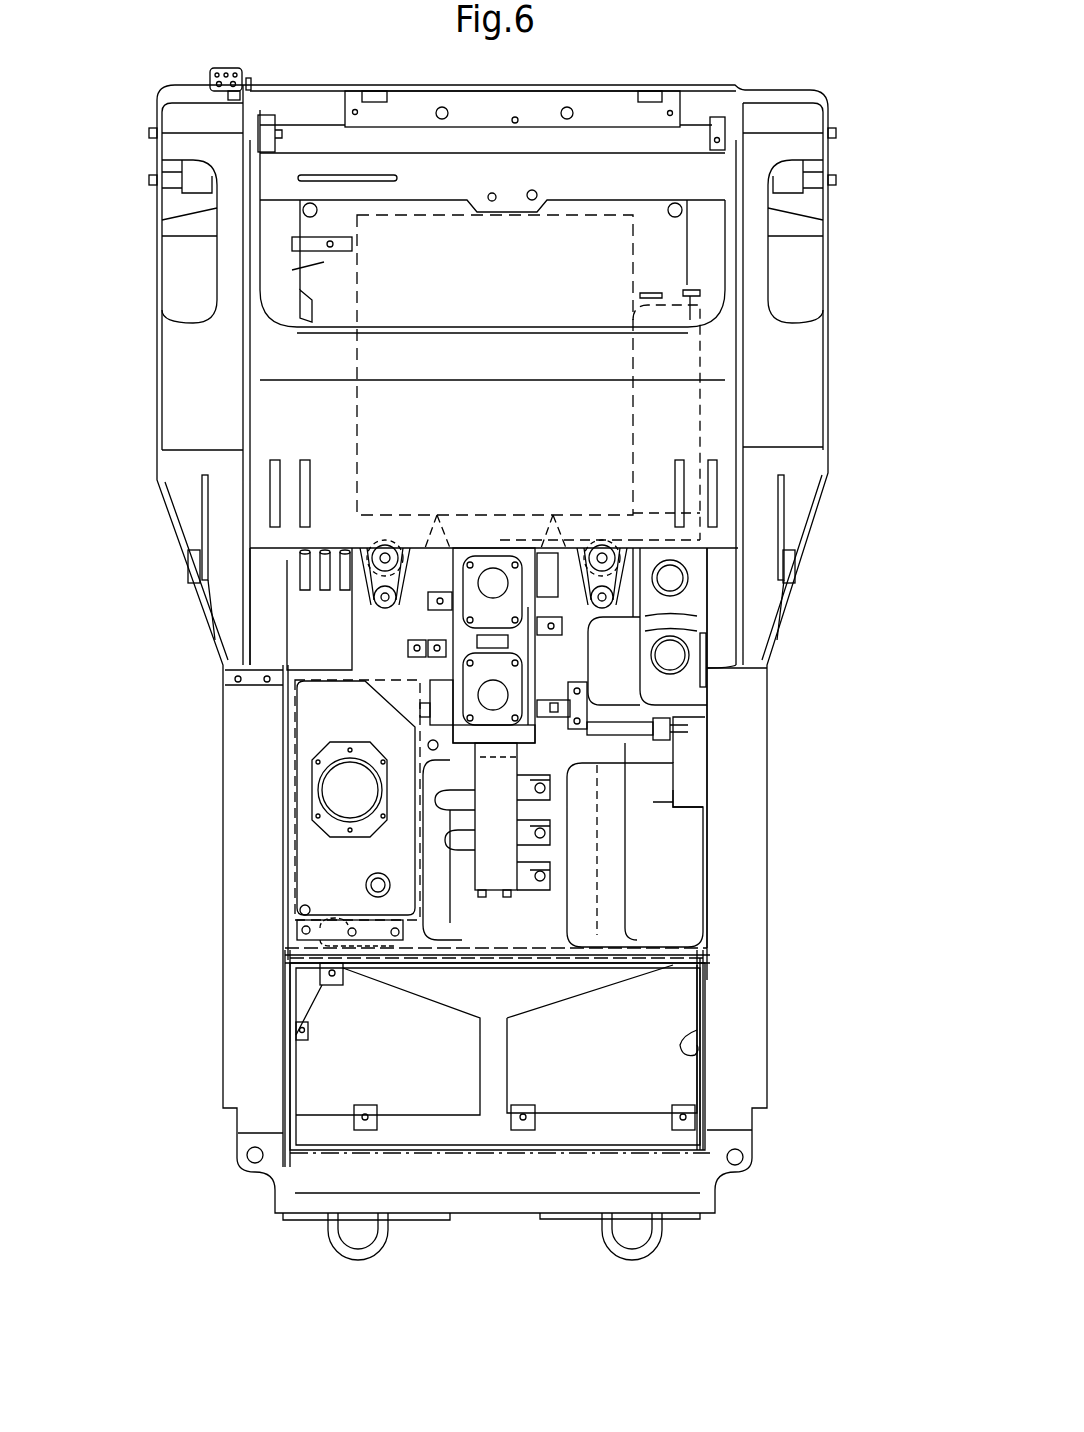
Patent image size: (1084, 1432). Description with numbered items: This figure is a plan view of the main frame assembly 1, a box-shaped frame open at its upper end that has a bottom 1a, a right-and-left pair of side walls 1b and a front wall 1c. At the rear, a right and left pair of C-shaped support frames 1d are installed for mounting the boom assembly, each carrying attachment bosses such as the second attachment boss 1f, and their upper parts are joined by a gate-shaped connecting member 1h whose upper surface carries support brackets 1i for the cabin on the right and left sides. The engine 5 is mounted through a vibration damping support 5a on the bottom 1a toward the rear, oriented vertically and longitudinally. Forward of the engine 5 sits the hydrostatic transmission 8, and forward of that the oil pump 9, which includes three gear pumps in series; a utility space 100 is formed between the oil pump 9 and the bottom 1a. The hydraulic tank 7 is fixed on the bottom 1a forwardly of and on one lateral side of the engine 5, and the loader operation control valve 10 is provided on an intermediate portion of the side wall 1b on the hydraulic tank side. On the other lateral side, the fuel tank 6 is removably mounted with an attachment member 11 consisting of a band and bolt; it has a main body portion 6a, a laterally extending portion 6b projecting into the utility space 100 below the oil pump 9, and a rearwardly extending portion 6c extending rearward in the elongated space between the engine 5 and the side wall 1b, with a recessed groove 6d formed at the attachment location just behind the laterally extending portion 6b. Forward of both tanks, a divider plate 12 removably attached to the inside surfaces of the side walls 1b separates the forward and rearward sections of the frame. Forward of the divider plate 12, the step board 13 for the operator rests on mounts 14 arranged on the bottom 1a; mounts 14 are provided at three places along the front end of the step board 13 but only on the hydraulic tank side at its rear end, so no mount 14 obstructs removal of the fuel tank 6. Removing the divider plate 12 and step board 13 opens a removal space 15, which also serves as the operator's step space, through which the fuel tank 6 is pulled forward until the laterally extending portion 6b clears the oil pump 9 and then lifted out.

The main frame assembly 1 is at (845, 288).
The bottom 1a is at (572, 1133).
The side walls 1b is at (707, 937).
The front wall 1c is at (672, 1153).
The support frames 1d is at (156, 155).
The second attachment boss 1f is at (188, 580).
The connecting member 1h is at (490, 348).
The support brackets 1i is at (270, 472).
The engine 5 is at (345, 436).
The vibration damping support 5a is at (370, 545).
The fuel tank 6 is at (703, 837).
The main body portion 6a is at (662, 888).
The laterally extending portion 6b is at (488, 942).
The rearwardly extending portion 6c is at (700, 410).
The recessed groove 6d is at (578, 736).
The hydraulic tank 7 is at (303, 848).
The hydrostatic transmission (HST) 8 is at (455, 660).
The oil pump 9 is at (470, 840).
The loader operation control valve 10 is at (297, 640).
The attachment member 11 is at (658, 711).
The divider plate 12 is at (295, 940).
The step board 13 is at (695, 1058).
The mounts 14 is at (322, 985).
The removal space 15 is at (622, 1070).
The utility space 100 is at (468, 918).